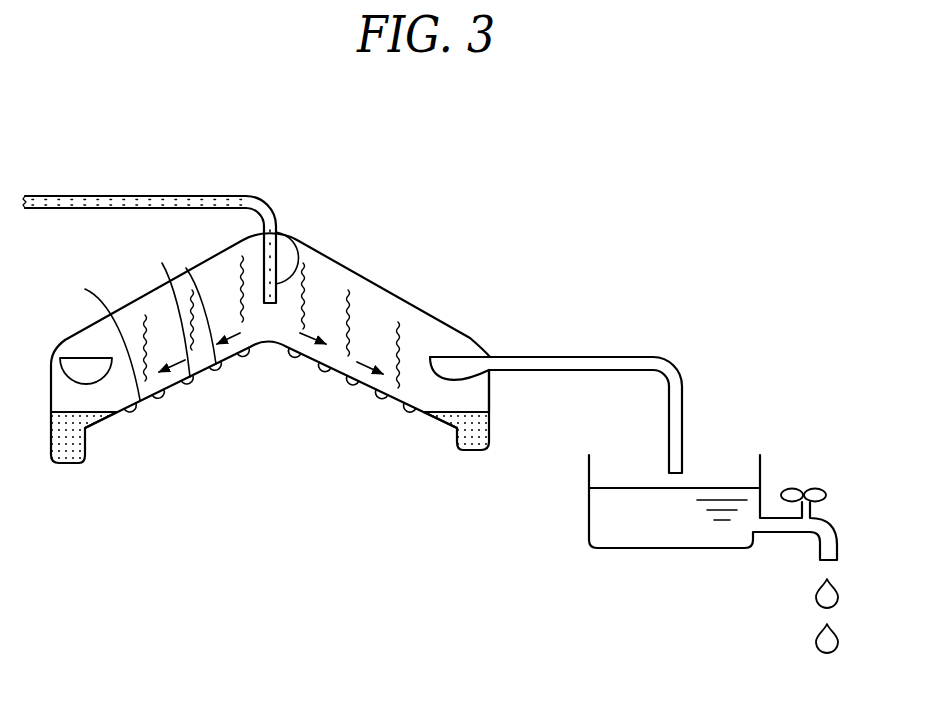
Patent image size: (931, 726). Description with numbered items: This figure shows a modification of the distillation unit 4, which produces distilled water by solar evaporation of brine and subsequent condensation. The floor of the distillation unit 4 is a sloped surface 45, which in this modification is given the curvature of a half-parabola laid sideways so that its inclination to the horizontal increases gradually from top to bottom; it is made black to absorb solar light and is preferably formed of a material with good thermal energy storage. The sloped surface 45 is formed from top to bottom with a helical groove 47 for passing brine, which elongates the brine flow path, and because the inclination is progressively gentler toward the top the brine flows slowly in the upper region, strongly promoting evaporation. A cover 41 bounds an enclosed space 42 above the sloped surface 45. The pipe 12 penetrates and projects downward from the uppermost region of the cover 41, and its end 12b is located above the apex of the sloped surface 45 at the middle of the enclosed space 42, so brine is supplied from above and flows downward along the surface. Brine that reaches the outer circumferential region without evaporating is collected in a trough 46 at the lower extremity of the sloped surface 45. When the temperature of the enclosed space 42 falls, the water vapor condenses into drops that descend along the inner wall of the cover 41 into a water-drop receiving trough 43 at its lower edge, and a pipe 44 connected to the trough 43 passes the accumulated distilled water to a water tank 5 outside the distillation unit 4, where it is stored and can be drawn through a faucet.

The distillation unit 4 is at (410, 258).
The water tank 5 is at (682, 550).
The pipe 12 is at (127, 196).
The end of the pipe 12b is at (298, 257).
The cover 41 is at (330, 252).
The enclosed space 42 is at (422, 330).
The water-drop receiving trough 43 is at (428, 363).
The pipe 44 is at (546, 357).
The sloped surface 45 is at (97, 340).
The trough 46 is at (492, 432).
The helical groove 47 is at (175, 316).